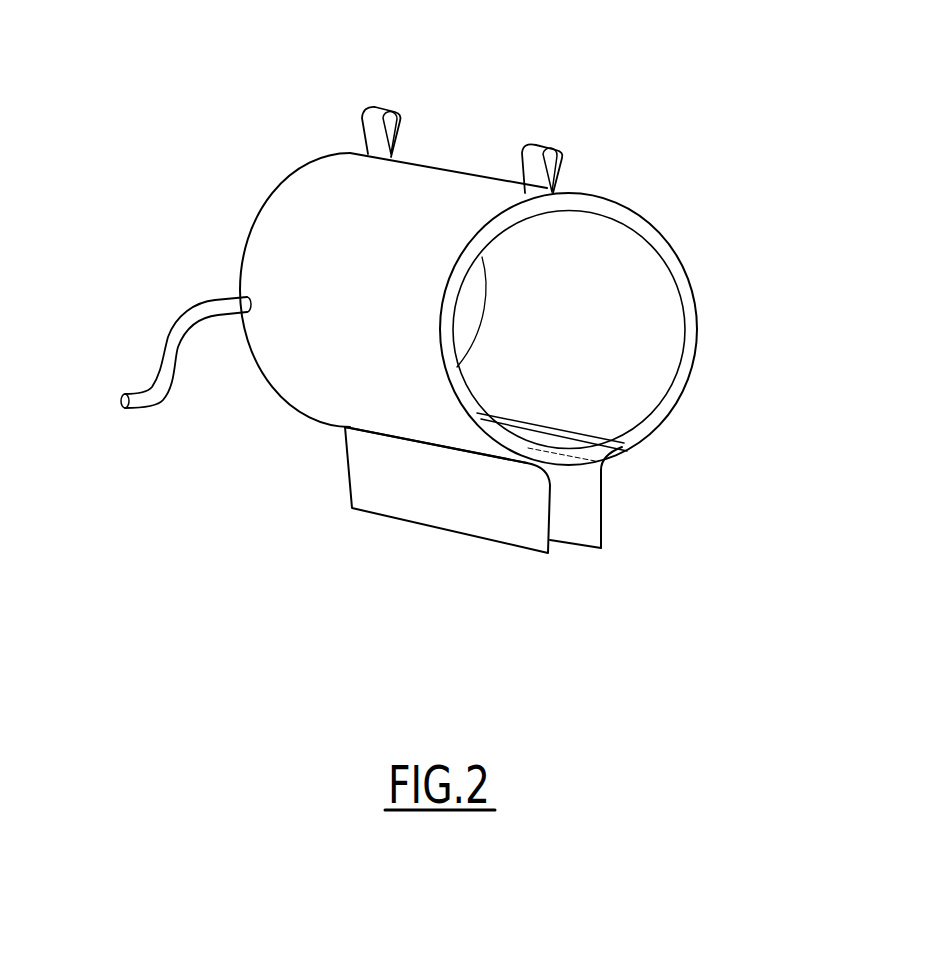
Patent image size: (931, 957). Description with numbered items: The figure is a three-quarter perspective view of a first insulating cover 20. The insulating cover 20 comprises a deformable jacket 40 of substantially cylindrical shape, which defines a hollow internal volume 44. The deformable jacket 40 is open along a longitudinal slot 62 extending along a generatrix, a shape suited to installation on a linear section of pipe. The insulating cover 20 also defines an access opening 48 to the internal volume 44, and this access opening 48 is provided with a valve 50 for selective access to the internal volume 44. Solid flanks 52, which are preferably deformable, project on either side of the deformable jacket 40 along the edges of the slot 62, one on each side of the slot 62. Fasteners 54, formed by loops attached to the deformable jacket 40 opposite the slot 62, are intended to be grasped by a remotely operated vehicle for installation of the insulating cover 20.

The insulating cover 20 is at (675, 145).
The deformable jacket 40 is at (297, 175).
The hollow internal volume 44 is at (622, 328).
The access opening 48 is at (226, 299).
The valve 50 is at (117, 400).
The solid flanks 52 is at (453, 493).
The fasteners 54 is at (532, 155).
The longitudinal slot 62 is at (572, 492).